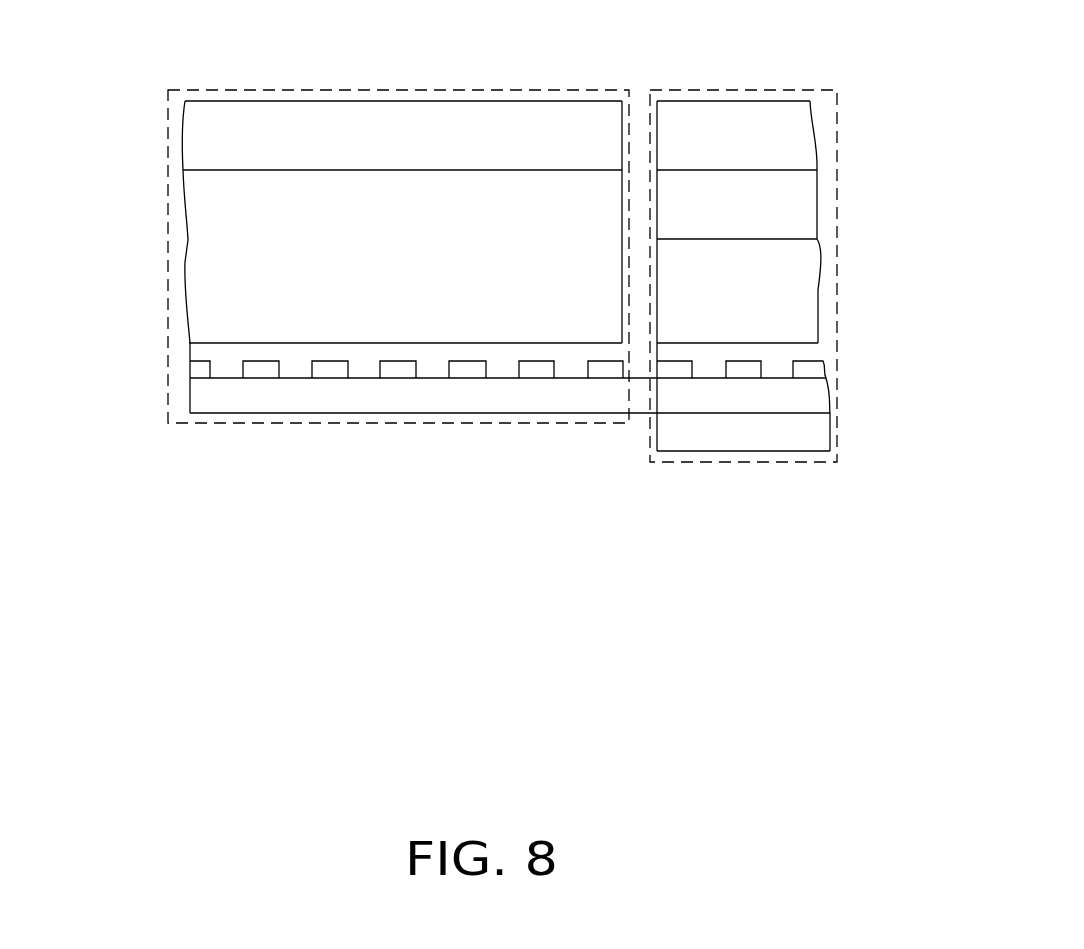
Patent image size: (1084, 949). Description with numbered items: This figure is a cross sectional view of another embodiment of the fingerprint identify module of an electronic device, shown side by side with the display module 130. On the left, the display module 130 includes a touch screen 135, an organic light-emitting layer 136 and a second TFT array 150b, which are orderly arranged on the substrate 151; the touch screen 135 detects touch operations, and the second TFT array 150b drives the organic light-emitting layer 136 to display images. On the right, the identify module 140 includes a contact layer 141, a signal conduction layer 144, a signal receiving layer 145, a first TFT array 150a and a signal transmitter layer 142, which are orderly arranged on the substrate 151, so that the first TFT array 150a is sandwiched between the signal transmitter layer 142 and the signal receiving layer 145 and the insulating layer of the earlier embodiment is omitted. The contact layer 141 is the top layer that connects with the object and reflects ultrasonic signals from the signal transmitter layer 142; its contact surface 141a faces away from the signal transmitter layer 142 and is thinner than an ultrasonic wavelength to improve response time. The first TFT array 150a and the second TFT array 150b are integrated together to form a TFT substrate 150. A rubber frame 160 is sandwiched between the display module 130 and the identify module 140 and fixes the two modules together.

The display module 130 is at (283, 90).
The touch screen 135 is at (230, 148).
The organic light-emitting layer 136 is at (223, 285).
The rubber frame 160 is at (640, 113).
The identify module 140 is at (724, 88).
The contact surface 141a is at (783, 102).
The contact layer 141 is at (782, 142).
The signal conduction layer 144 is at (782, 215).
The signal receiving layer 145 is at (782, 297).
The TFT substrate 150 is at (508, 462).
The first TFT array 150a is at (705, 369).
The second TFT array 150b is at (295, 379).
The substrate 151 is at (798, 385).
The signal transmitter layer 142 is at (808, 432).